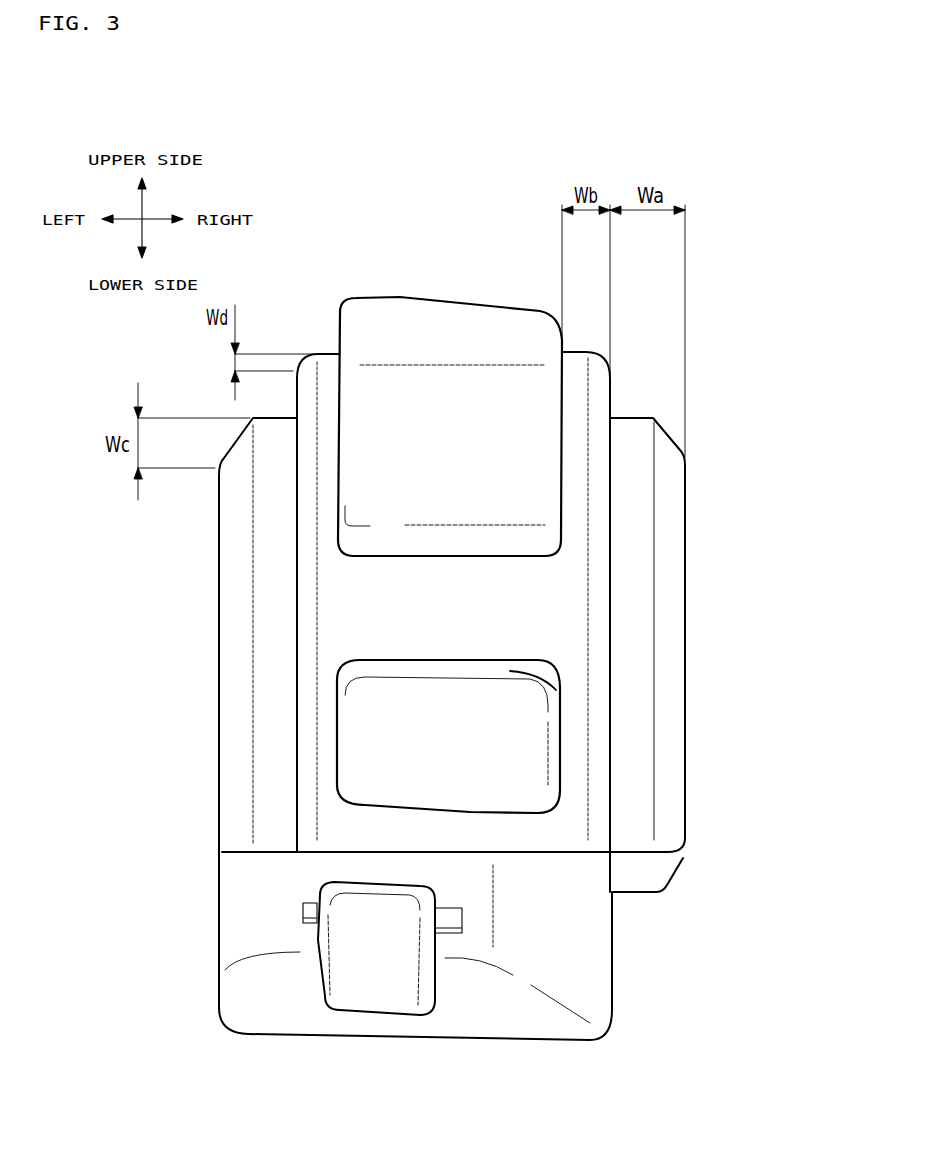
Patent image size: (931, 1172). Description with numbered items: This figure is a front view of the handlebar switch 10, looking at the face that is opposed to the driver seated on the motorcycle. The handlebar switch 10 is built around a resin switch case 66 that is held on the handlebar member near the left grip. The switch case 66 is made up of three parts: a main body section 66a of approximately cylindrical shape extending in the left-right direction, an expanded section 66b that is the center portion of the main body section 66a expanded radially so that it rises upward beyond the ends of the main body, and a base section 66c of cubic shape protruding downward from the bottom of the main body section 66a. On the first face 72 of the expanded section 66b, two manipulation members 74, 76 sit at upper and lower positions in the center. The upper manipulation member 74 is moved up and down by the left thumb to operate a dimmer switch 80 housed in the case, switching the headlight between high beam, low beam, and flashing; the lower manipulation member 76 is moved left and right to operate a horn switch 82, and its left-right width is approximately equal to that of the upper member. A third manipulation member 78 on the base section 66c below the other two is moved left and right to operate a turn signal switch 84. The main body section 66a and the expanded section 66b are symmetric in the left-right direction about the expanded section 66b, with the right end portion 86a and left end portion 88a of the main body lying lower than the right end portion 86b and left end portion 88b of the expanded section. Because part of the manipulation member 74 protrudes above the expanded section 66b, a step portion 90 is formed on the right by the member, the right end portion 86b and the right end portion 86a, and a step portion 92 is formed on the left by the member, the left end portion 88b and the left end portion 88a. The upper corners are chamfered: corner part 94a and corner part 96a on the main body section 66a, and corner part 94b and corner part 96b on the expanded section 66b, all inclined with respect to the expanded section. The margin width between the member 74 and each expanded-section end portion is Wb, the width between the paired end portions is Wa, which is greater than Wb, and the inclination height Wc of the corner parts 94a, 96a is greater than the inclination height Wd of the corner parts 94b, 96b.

The handlebar switch 10 is at (388, 182).
The switch case 66 is at (701, 873).
The main body section 66a is at (243, 777).
The expanded section 66b is at (330, 628).
The base section 66c is at (255, 924).
The first face 72 is at (568, 600).
The manipulation member 74 is at (437, 315).
The dimmer switch 80 is at (450, 426).
The manipulation member 76 is at (455, 692).
The horn switch 82 is at (448, 736).
The manipulation member 78 is at (383, 1000).
The turn signal switch 84 is at (382, 948).
The right end portion 86a is at (688, 508).
The right end portion 86b is at (612, 390).
The left end portion 88a is at (219, 573).
The left end portion 88b is at (296, 388).
The step portion 90 is at (625, 354).
The step portion 92 is at (219, 379).
The corner part 94a is at (672, 447).
The corner part 94b is at (600, 348).
The corner part 96a is at (240, 437).
The corner part 96b is at (300, 352).